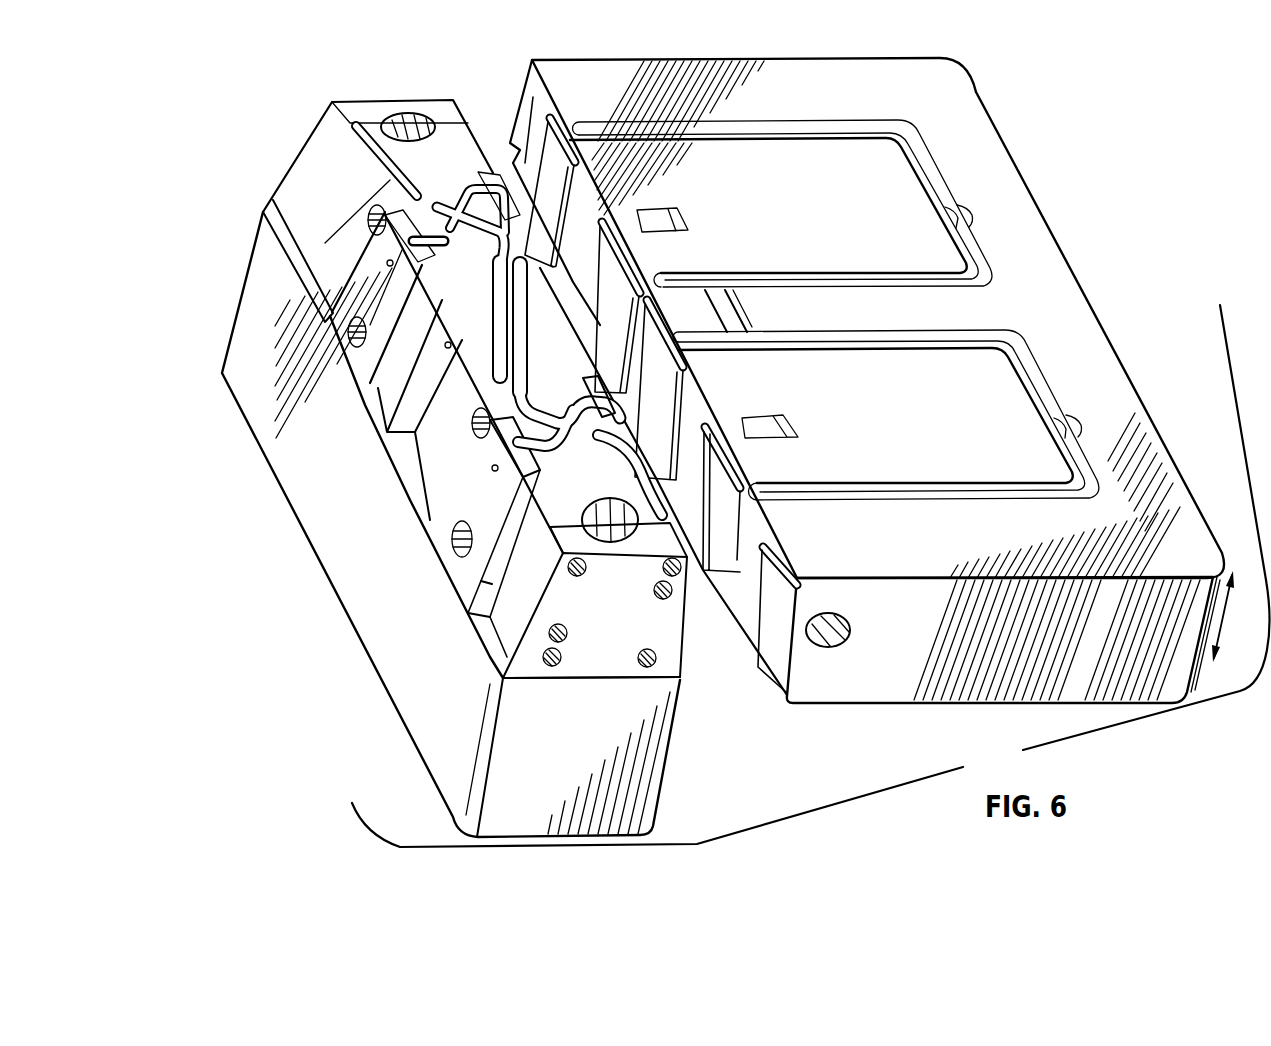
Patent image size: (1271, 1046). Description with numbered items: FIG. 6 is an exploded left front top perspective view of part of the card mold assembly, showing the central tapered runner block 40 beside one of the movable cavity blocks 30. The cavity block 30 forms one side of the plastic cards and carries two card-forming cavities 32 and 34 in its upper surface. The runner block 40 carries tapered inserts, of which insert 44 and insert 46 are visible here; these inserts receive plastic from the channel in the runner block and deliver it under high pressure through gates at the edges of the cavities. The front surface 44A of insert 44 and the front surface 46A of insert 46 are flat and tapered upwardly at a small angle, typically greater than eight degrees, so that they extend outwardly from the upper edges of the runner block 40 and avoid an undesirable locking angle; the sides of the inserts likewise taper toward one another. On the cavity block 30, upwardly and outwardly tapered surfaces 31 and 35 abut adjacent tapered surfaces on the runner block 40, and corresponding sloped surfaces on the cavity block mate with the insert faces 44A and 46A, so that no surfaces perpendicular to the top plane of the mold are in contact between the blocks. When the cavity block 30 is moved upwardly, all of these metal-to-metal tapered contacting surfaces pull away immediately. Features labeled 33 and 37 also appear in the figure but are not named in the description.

The movable cavity block 30 is at (957, 86).
The tapered surface 31 is at (747, 607).
The cavity 32 is at (983, 392).
The guide plate 33 is at (688, 428).
The cavity 34 is at (803, 173).
The tapered surface 35 is at (547, 153).
The intermediate guide plate 37 is at (588, 217).
The central tapered runner block 40 is at (373, 108).
The tapered insert 44 is at (425, 213).
The front surface of insert 44A is at (367, 292).
The tapered insert 46 is at (493, 402).
The front surface of insert 46A is at (438, 532).